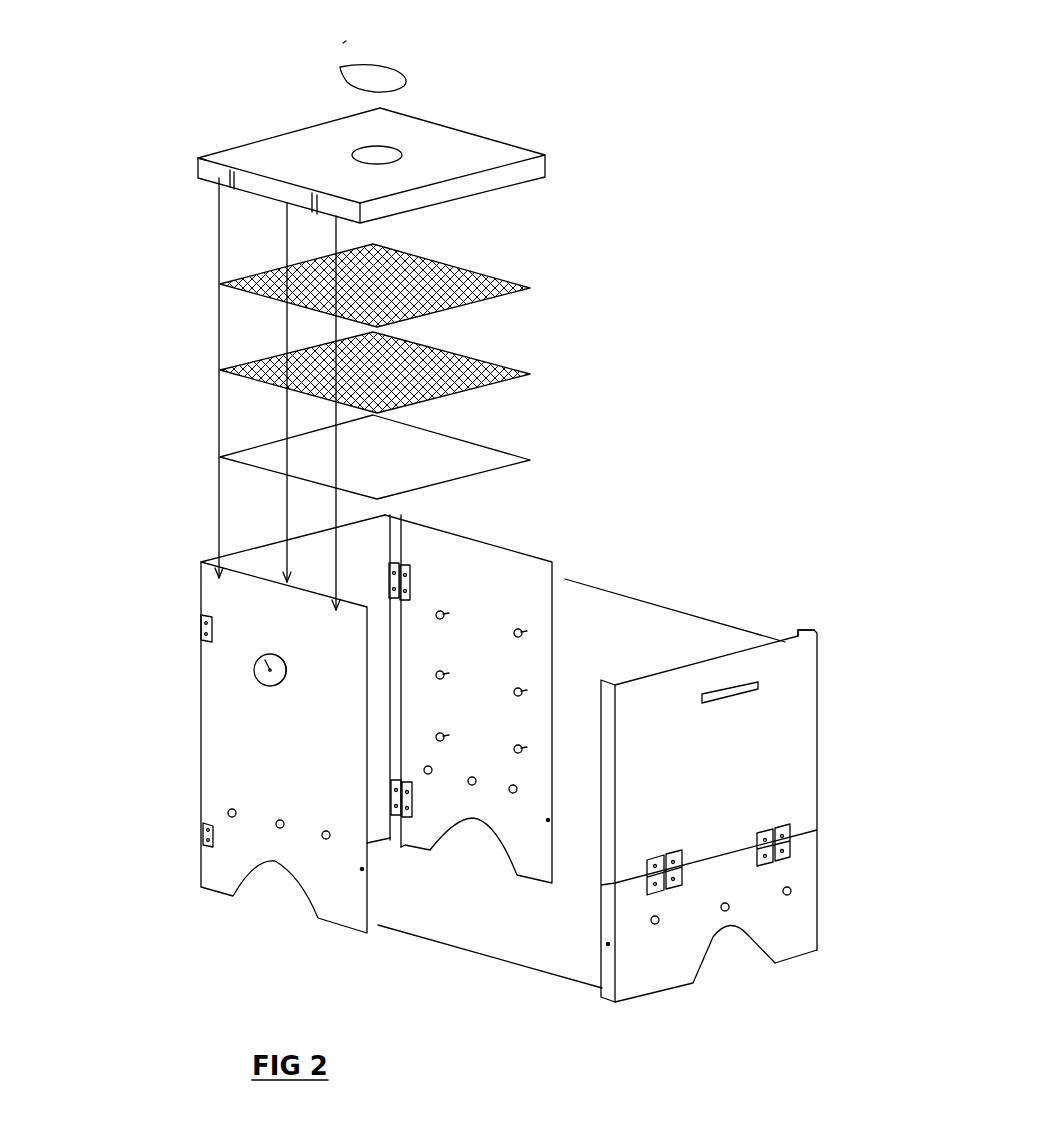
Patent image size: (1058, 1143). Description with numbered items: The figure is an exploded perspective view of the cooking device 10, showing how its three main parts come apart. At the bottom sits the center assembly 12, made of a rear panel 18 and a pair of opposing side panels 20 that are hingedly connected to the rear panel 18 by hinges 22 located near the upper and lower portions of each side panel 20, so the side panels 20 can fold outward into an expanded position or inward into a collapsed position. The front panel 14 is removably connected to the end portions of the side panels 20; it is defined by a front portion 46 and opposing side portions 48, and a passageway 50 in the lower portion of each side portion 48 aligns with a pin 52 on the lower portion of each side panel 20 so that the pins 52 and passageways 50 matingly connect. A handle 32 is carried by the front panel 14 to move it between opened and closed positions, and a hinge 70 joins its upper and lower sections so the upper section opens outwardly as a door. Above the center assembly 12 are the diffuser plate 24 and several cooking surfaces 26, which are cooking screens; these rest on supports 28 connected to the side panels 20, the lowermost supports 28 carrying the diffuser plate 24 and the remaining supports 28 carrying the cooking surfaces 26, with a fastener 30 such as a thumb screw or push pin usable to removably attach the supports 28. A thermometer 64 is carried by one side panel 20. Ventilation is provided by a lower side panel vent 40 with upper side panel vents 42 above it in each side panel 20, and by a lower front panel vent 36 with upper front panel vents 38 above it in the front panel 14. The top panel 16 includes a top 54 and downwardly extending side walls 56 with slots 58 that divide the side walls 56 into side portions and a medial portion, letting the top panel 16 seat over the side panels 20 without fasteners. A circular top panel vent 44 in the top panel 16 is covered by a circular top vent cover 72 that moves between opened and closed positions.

The cooking device 10 is at (727, 435).
The center assembly 12 is at (486, 517).
The front panel 14 is at (750, 815).
The top panel 16 is at (346, 165).
The rear panel 18 is at (271, 533).
The side panels 20 is at (498, 543).
The hinges 22 is at (400, 565).
The diffuser plate 24 is at (392, 460).
The cooking surfaces 26 is at (433, 397).
The supports 28 is at (530, 748).
The fastener 30 is at (345, 42).
The handle 32 is at (757, 683).
The lower front panel vent 36 is at (760, 947).
The upper front panel vents 38 is at (791, 892).
The lower side panel vent 40 is at (270, 899).
The upper side panel vents 42 is at (322, 835).
The top panel vent 44 is at (387, 160).
The front portion 46 is at (750, 740).
The side portions 48 is at (803, 628).
The passageway 50 is at (602, 959).
The pins 52 is at (547, 823).
The top 54 is at (447, 128).
The side walls 56 is at (203, 168).
The slots 58 is at (217, 180).
The thermometer 64 is at (254, 673).
The hinge 70 is at (790, 828).
The top vent cover 72 is at (393, 75).